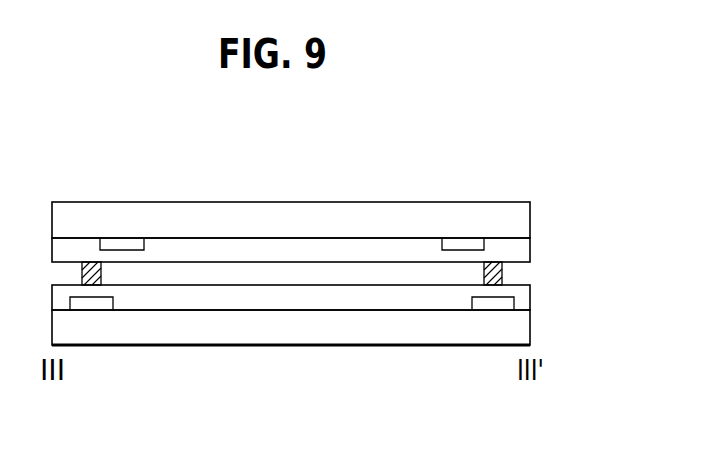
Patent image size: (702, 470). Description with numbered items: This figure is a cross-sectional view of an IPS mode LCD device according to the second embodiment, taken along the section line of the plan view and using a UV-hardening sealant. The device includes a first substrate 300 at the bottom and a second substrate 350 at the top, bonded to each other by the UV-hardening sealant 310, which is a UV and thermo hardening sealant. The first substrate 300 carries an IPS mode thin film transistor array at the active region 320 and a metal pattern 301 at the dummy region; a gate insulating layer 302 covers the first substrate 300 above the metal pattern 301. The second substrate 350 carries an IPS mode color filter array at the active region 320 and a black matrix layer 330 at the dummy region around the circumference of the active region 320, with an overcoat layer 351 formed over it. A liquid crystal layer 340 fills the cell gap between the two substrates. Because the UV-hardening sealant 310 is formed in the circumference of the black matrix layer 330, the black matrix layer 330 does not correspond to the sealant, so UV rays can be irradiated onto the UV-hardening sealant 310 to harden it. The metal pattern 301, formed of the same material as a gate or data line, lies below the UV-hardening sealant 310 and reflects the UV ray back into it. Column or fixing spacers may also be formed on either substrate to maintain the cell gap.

The first substrate 300 is at (525, 328).
The metal pattern 301 is at (485, 303).
The gate insulating layer 302 is at (525, 300).
The UV-hardening sealant 310 is at (502, 272).
The active region 320 is at (442, 202).
The black matrix layer 330 is at (470, 243).
The liquid crystal layer 340 is at (382, 273).
The second substrate 350 is at (525, 218).
The overcoat layer 351 is at (525, 250).